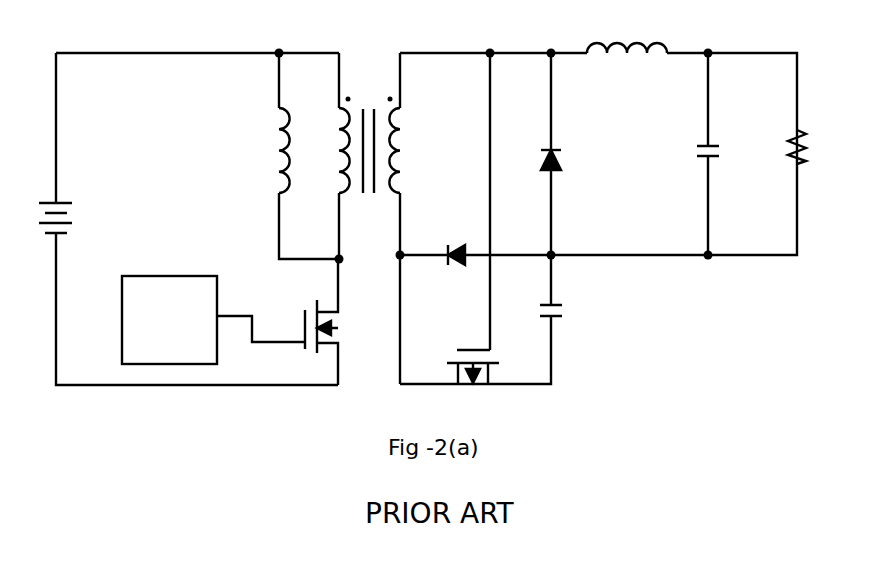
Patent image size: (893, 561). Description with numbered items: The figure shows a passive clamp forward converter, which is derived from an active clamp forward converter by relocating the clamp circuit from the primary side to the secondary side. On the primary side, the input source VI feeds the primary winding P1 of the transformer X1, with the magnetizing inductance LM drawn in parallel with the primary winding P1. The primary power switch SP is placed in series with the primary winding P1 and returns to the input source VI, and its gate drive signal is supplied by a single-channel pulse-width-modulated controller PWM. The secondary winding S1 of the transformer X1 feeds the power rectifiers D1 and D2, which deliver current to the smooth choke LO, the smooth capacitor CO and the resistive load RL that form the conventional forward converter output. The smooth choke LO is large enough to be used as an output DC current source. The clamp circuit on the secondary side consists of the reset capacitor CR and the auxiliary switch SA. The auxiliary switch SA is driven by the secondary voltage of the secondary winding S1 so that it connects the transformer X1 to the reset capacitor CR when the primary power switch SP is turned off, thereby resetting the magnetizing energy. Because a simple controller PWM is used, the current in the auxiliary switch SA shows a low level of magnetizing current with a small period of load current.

The input source VI is at (66, 219).
The magnetizing inductance LM is at (268, 150).
The primary winding P1 is at (330, 150).
The transformer X1 is at (369, 131).
The secondary winding S1 is at (405, 150).
The power rectifier D2 is at (568, 162).
The smooth choke LO is at (627, 34).
The smooth capacitor CO is at (689, 155).
The resistive load RL is at (779, 148).
The power rectifier D1 is at (456, 274).
The reset capacitor CR is at (562, 322).
The auxiliary switch SA is at (473, 381).
The pulse-width-modulated controller PWM is at (213, 320).
The primary power switch SP is at (333, 322).